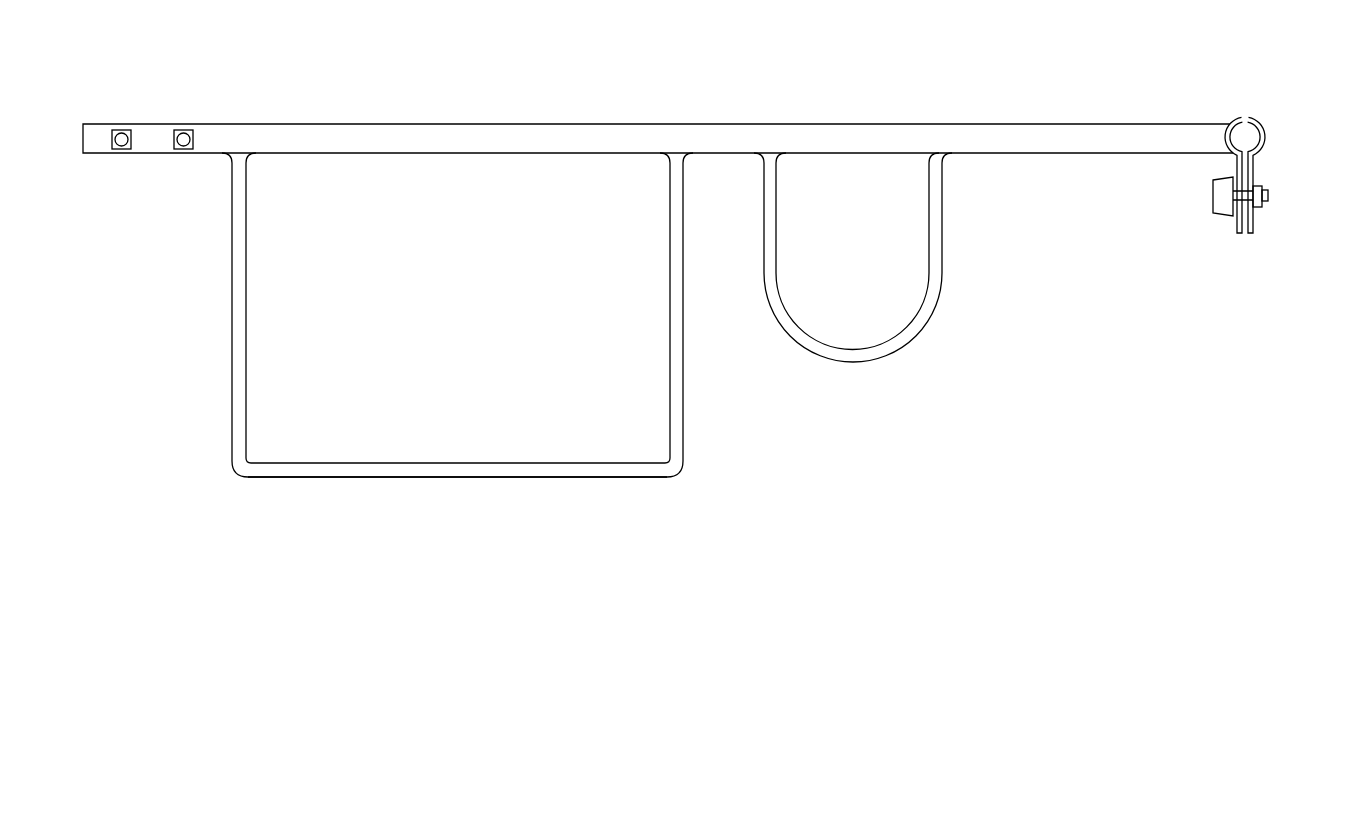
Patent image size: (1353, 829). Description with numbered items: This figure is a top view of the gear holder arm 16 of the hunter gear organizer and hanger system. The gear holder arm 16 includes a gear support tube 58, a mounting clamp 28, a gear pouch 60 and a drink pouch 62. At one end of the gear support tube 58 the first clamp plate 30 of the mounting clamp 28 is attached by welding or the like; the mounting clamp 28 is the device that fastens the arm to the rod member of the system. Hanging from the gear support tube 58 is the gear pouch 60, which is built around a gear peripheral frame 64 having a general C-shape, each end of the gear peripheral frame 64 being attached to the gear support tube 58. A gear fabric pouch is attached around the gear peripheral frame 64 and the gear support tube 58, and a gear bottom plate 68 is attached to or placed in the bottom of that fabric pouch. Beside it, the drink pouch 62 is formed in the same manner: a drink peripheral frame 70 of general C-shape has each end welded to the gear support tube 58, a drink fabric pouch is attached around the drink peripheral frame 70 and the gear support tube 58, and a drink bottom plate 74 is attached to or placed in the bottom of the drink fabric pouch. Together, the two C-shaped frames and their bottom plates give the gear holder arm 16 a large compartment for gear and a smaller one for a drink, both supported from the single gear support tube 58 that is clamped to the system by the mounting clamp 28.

The gear holder arm 16 is at (1029, 82).
The gear support tube 58 is at (767, 124).
The gear pouch 60 is at (405, 348).
The drink pouch 62 is at (899, 289).
The gear peripheral frame 64 is at (485, 478).
The gear bottom plate 68 is at (436, 340).
The drink peripheral frame 70 is at (940, 298).
The drink bottom plate 74 is at (866, 252).
The mounting clamp 28 is at (1256, 197).
The first clamp plate 30 is at (1240, 233).